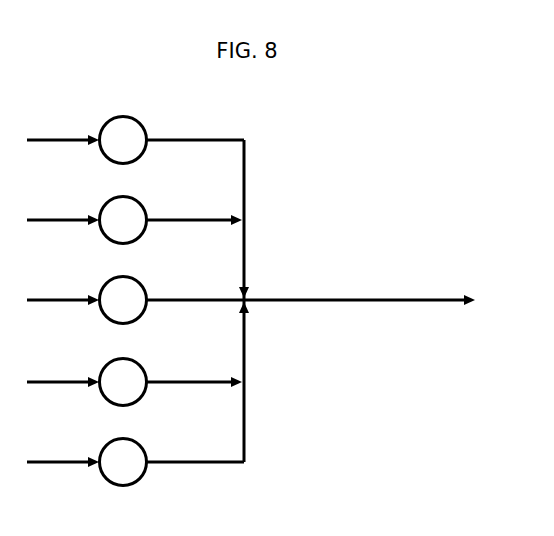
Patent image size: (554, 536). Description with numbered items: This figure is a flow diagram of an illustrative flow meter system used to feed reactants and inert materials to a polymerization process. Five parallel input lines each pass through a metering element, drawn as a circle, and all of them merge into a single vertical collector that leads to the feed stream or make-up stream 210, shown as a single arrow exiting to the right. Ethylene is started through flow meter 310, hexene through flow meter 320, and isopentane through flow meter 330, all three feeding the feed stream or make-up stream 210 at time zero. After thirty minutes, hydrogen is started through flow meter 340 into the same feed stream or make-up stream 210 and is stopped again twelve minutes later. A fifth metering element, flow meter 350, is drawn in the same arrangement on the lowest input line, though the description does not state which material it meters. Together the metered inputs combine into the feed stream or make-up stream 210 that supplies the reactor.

The flow meter 310 is at (87, 130).
The flow meter 320 is at (87, 210).
The flow meter 330 is at (87, 290).
The flow meter 340 is at (87, 371).
The fifth comparator 350 is at (87, 452).
The feed stream or make-up stream 210 is at (311, 278).